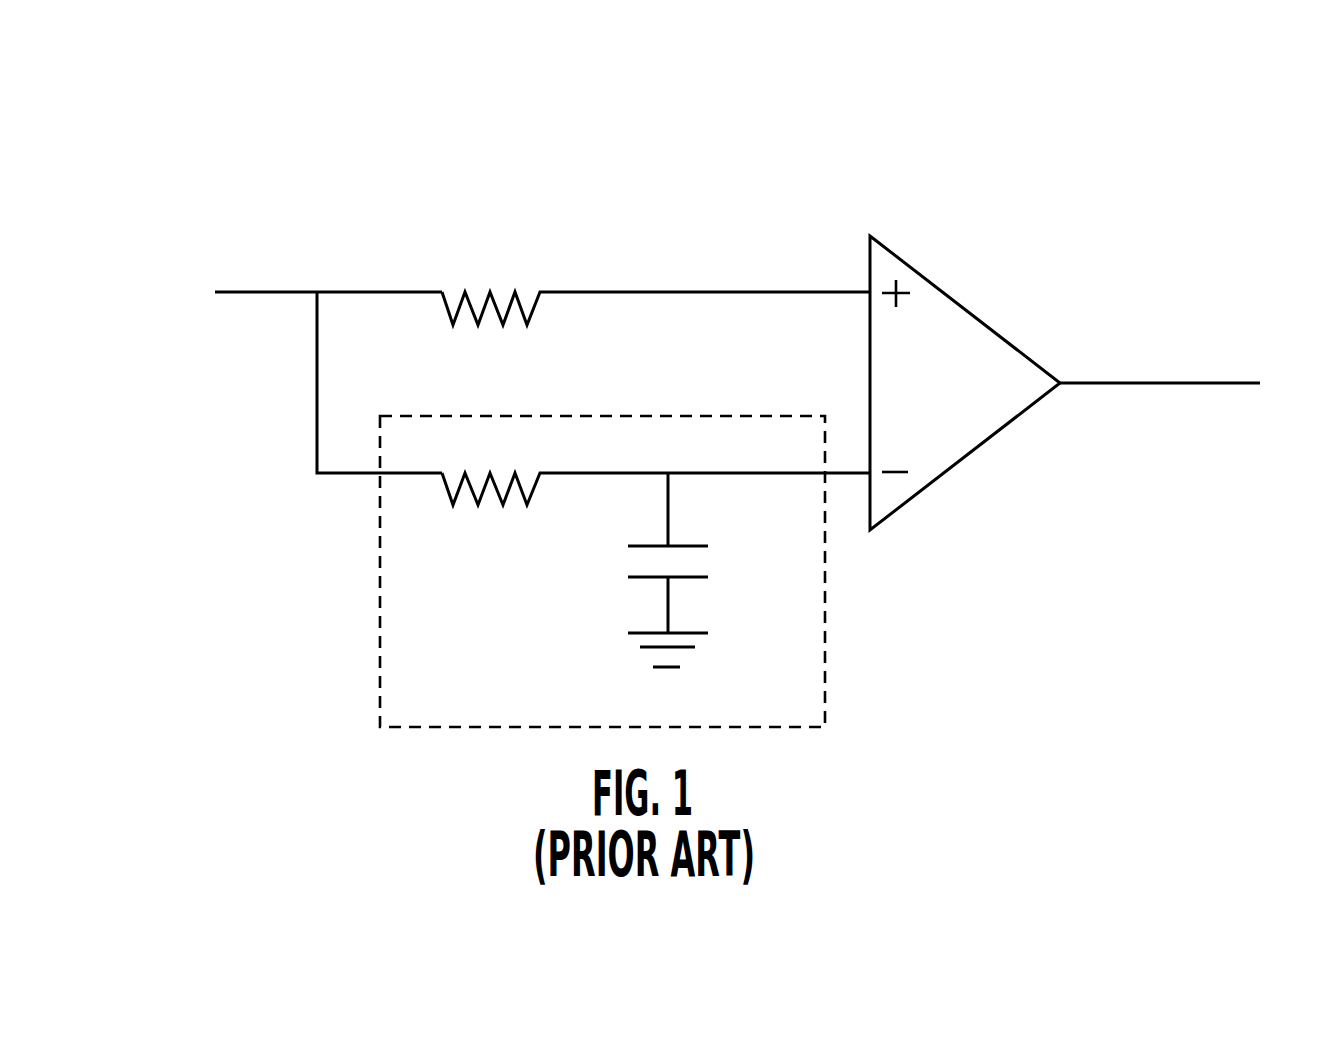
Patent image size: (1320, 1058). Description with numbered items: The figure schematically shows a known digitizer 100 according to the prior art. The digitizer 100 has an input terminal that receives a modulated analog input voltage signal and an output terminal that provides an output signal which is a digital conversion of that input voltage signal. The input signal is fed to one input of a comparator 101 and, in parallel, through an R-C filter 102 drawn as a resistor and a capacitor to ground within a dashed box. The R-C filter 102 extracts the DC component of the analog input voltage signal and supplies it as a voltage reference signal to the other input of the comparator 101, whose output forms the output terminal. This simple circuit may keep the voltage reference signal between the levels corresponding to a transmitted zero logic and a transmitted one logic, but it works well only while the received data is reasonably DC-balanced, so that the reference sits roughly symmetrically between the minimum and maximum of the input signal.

The digitizer 100 is at (632, 242).
The comparator 101 is at (940, 363).
The R-C filter 102 is at (415, 563).